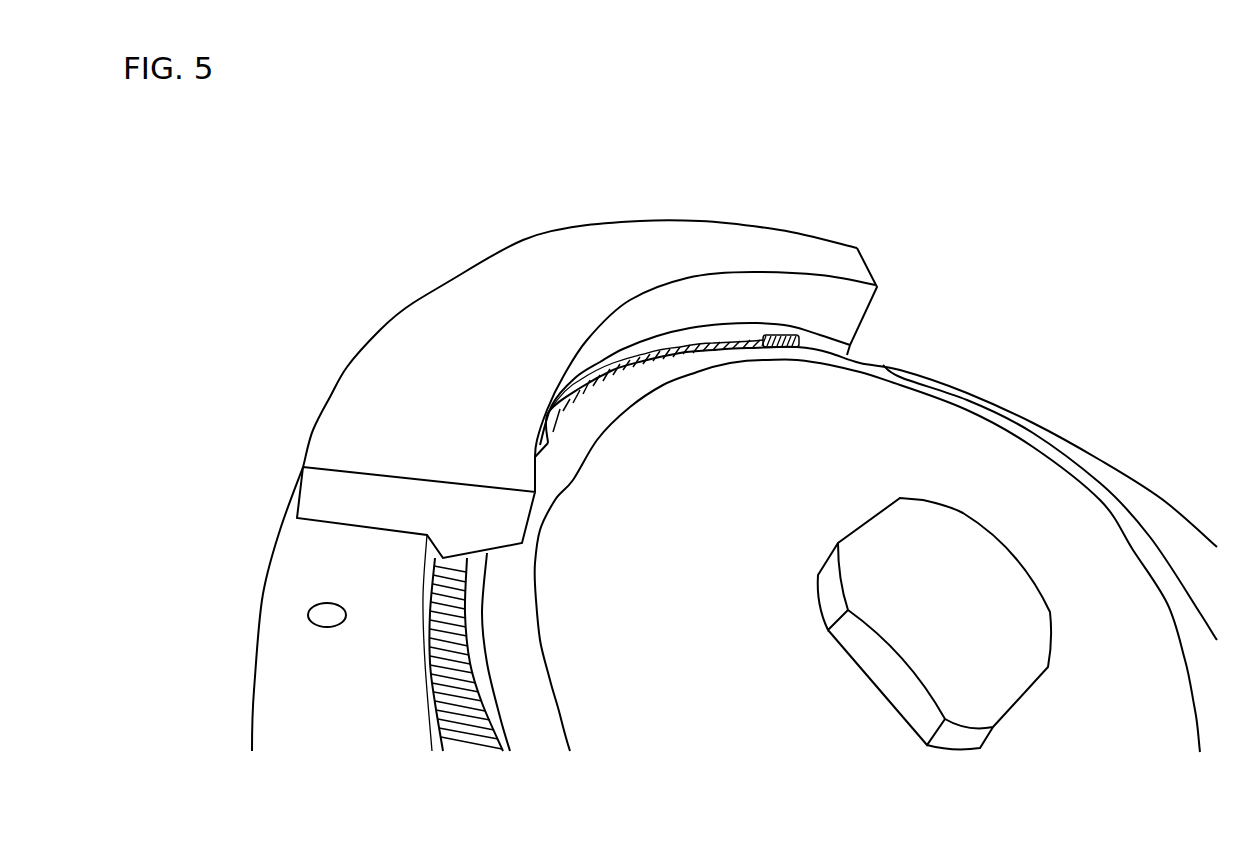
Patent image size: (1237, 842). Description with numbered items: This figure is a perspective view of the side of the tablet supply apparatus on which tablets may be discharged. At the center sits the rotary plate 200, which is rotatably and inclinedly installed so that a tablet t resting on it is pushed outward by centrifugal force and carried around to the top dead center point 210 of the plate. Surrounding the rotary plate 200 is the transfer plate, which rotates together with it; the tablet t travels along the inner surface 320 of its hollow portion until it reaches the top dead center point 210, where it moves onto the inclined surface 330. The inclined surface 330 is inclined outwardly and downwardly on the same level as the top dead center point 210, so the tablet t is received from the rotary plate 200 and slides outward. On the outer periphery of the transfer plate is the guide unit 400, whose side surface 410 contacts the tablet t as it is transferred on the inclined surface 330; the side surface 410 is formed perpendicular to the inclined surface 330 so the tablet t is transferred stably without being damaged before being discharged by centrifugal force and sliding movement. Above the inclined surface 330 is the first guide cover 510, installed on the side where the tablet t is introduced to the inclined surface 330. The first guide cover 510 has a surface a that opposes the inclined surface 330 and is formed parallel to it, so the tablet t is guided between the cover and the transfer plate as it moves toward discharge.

The first guide cover 510 is at (429, 350).
The surface a is at (503, 535).
The tablet t is at (790, 333).
The top dead center point 210 is at (823, 360).
The rotary plate 200 is at (967, 447).
The side surface 410 is at (427, 587).
The guide unit 400 is at (345, 720).
The inclined surface 330 is at (448, 692).
The inner surface 320 is at (477, 640).